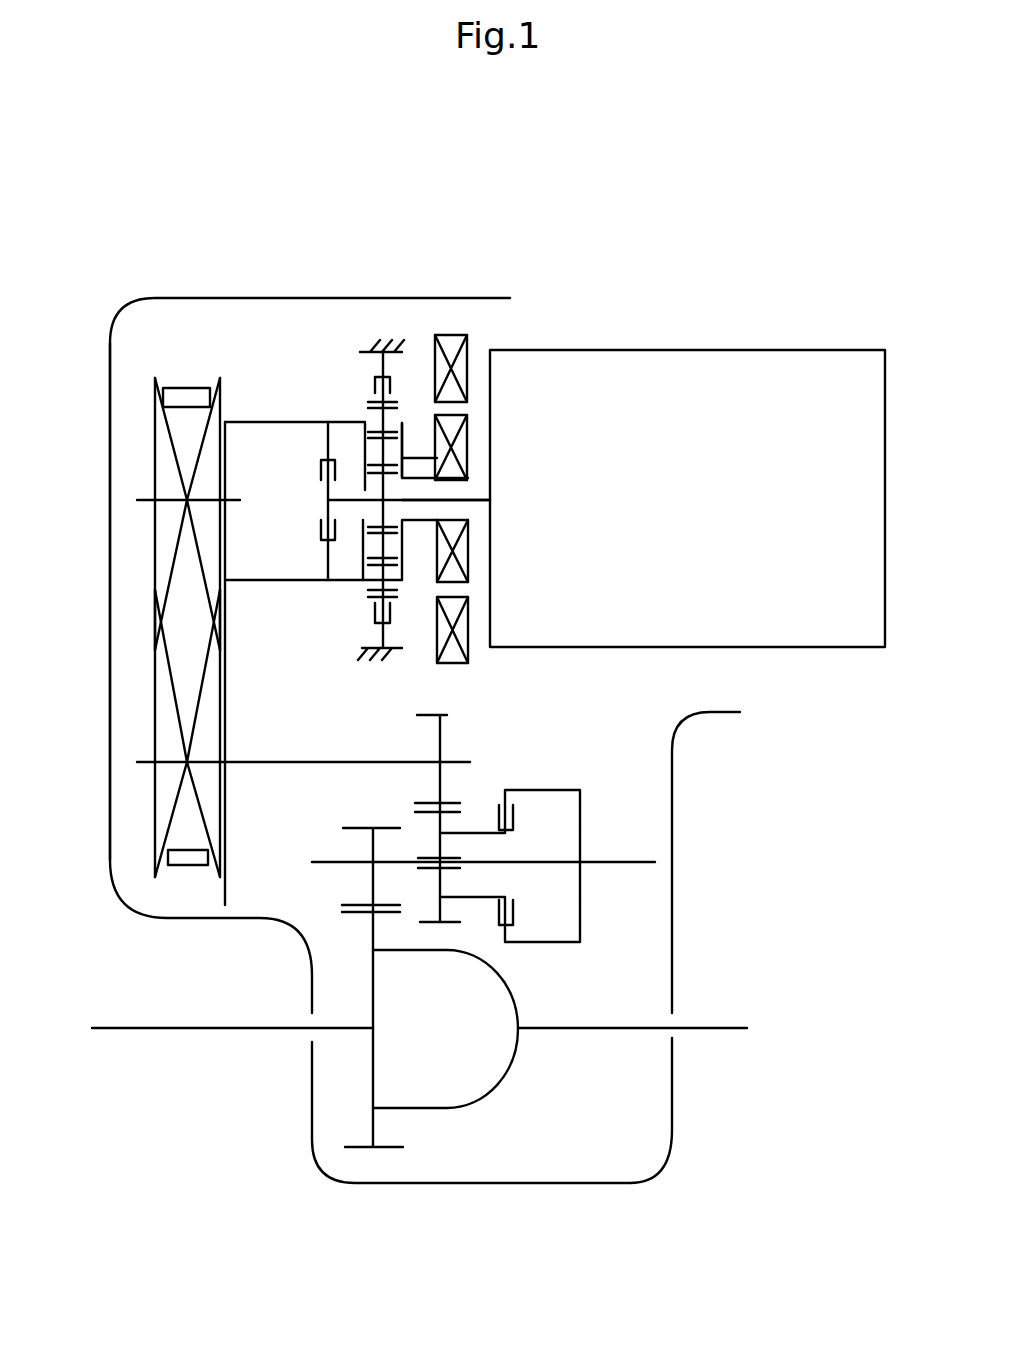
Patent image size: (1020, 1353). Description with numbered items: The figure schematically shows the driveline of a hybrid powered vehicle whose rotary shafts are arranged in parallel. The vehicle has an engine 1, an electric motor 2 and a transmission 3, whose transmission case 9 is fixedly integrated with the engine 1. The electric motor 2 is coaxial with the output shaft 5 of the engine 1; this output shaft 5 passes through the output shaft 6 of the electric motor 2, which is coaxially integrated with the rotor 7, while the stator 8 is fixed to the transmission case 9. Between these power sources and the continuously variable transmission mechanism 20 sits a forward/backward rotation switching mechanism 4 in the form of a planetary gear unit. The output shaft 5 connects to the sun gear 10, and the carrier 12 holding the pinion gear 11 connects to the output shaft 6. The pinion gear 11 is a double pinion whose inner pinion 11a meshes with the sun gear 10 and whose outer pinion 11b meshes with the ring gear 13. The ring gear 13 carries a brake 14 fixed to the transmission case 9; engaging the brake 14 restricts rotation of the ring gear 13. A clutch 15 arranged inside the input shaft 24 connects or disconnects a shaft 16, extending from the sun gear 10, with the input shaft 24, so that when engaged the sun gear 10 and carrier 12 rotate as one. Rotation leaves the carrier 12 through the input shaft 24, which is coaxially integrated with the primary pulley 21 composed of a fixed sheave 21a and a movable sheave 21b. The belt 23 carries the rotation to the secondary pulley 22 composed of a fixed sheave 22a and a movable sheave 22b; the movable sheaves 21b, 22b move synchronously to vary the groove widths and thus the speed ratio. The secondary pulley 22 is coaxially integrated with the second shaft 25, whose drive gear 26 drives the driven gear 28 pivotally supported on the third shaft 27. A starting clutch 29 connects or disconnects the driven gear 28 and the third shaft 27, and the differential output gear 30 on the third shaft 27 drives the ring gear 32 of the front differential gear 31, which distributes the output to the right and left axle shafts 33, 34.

The engine 1 is at (812, 350).
The electric motor 2 is at (455, 330).
The transmission 3 is at (200, 290).
The forward/backward rotation switching mechanism 4 is at (350, 345).
The output shaft 5 is at (473, 502).
The output shaft 6 is at (420, 523).
The rotor 7 is at (470, 432).
The stator 8 is at (470, 348).
The transmission case 9 is at (112, 623).
The sun gear 10 is at (363, 492).
The pinion gear 11 is at (358, 445).
The inner pinion 11a is at (470, 462).
The outer pinion 11b is at (368, 407).
The carrier 12 is at (408, 425).
The ring gear 13 is at (397, 600).
The brake 14 is at (370, 384).
The clutch 15 is at (313, 498).
The shaft 16 is at (327, 493).
The continuously variable transmission mechanism 20 is at (234, 640).
The primary pulley 21 is at (227, 460).
The sheave 21a is at (228, 413).
The sheave 21b is at (150, 413).
The secondary pulley 22 is at (238, 860).
The sheave 22a is at (153, 690).
The sheave 22b is at (227, 720).
The belt 23 is at (192, 866).
The input shaft 24 is at (137, 502).
The second shaft 25 is at (258, 765).
The drive gear 26 is at (452, 712).
The third shaft 27 is at (623, 860).
The driven gear 28 is at (432, 813).
The starting clutch 29 is at (485, 791).
The differential output gear 30 is at (355, 828).
The front differential gear 31 is at (355, 913).
The ring gear 32 is at (524, 980).
The axle shaft 33 is at (203, 1028).
The axle shaft 34 is at (716, 1023).